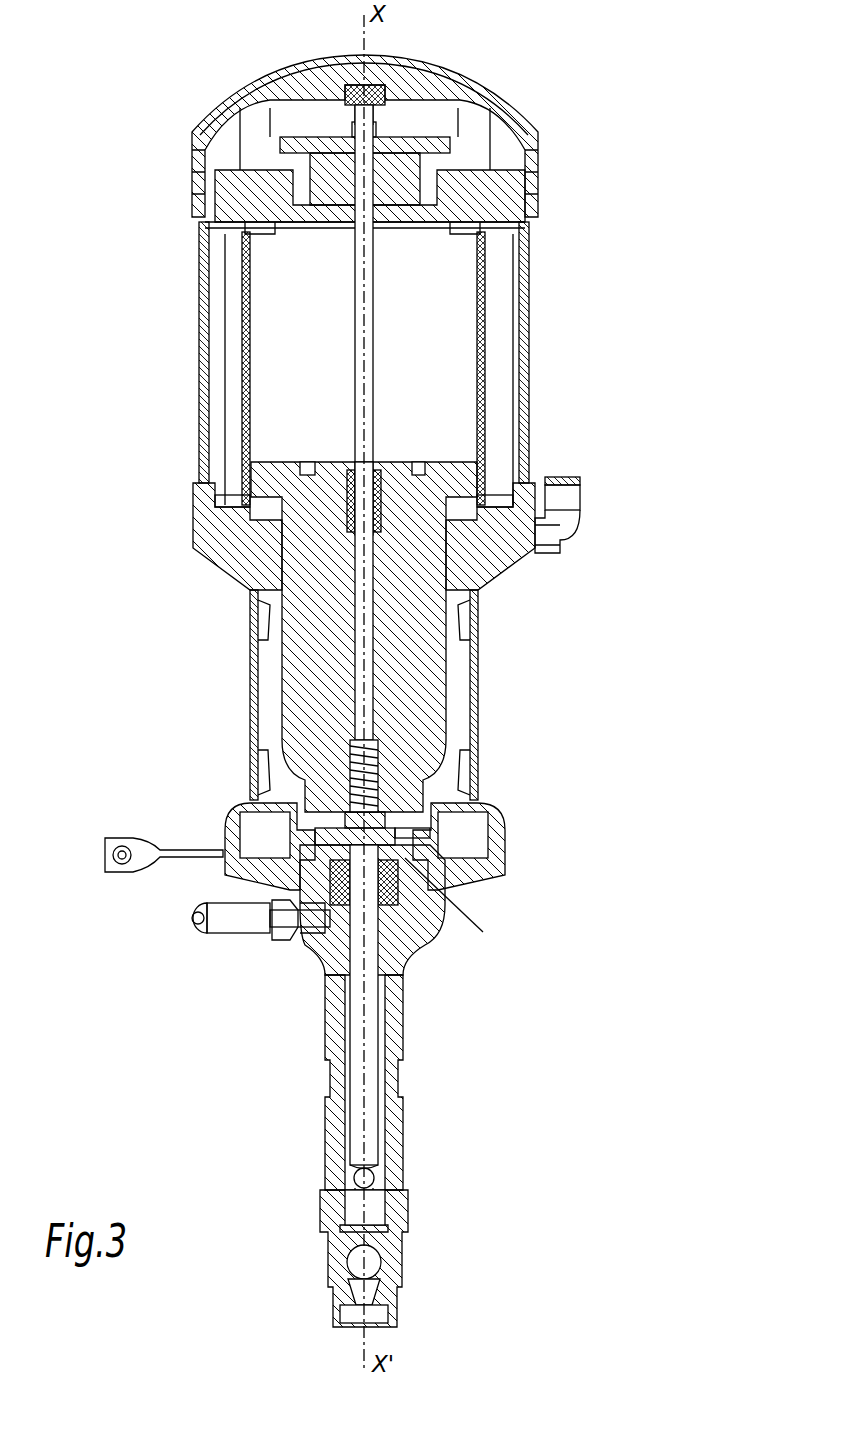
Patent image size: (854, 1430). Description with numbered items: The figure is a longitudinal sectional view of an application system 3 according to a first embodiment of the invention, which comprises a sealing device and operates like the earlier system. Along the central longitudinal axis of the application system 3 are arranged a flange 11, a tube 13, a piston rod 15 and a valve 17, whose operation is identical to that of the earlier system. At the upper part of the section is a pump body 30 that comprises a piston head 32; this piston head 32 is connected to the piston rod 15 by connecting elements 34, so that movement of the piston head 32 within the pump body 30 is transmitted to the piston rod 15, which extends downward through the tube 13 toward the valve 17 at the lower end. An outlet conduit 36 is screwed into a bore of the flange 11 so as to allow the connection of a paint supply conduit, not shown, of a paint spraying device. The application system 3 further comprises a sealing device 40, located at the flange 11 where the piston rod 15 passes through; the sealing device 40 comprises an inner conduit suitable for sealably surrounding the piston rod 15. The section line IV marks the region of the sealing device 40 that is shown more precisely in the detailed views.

The application system 3 is at (597, 628).
The pump body 30 is at (222, 326).
The piston head 32 is at (400, 525).
The connecting elements 34 is at (440, 822).
The flange 11 is at (497, 887).
The section line IV is at (457, 902).
The sealing device 40 is at (430, 945).
The outlet conduit 36 is at (280, 937).
The piston rod 15 is at (370, 1000).
The tube 13 is at (394, 1116).
The valve 17 is at (398, 1260).